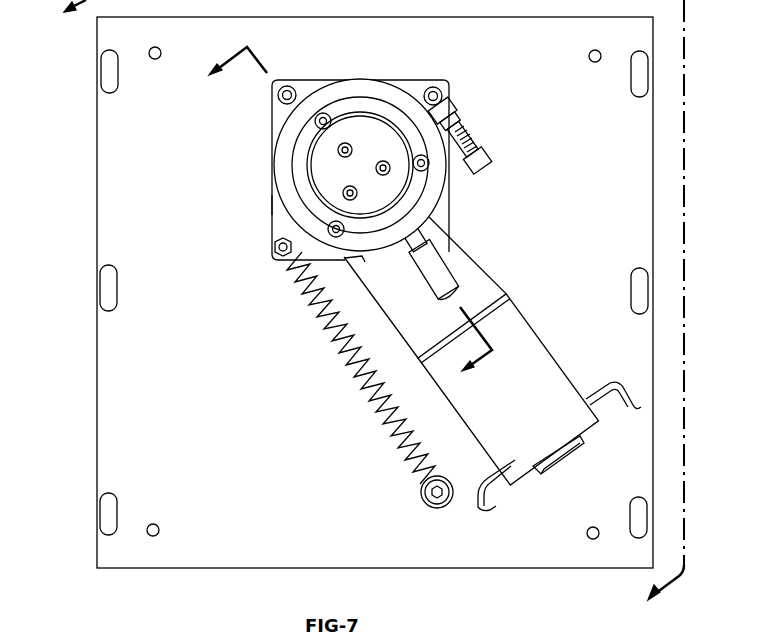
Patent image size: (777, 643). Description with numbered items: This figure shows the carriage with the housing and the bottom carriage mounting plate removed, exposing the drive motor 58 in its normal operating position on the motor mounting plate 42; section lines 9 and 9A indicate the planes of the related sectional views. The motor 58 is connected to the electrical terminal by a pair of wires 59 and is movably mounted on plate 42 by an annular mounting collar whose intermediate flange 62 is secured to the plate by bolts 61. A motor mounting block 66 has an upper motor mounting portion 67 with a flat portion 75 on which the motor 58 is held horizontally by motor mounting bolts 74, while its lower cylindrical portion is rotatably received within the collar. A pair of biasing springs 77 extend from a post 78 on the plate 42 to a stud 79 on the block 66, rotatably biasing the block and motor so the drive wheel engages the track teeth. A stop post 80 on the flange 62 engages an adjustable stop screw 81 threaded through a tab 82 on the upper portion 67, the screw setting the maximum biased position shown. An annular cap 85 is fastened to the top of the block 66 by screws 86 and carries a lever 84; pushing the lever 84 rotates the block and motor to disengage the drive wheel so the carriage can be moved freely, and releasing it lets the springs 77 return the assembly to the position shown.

The section line 9- 9 is at (367, 309).
The section line 9A- 9A is at (345, 220).
The motor mounting plate 42 is at (118, 197).
The drive motor 58 is at (515, 322).
The wires 59 is at (619, 392).
The bolts 61 is at (276, 94).
The intermediate flange 62 is at (272, 117).
The motor mounting block 66 is at (265, 201).
The upper motor mounting portion 67 is at (313, 93).
The motor mounting bolts 74 is at (357, 260).
The flat portion 75 is at (438, 170).
The biasing springs 77 is at (366, 388).
The post 78 is at (425, 500).
The stud 79 is at (274, 246).
The stop post 80 is at (433, 86).
The adjustable stop screw 81 is at (477, 136).
The tab 82 is at (450, 107).
The lever 84 is at (445, 262).
The annular cap 85 is at (323, 167).
The screws 86 is at (352, 143).